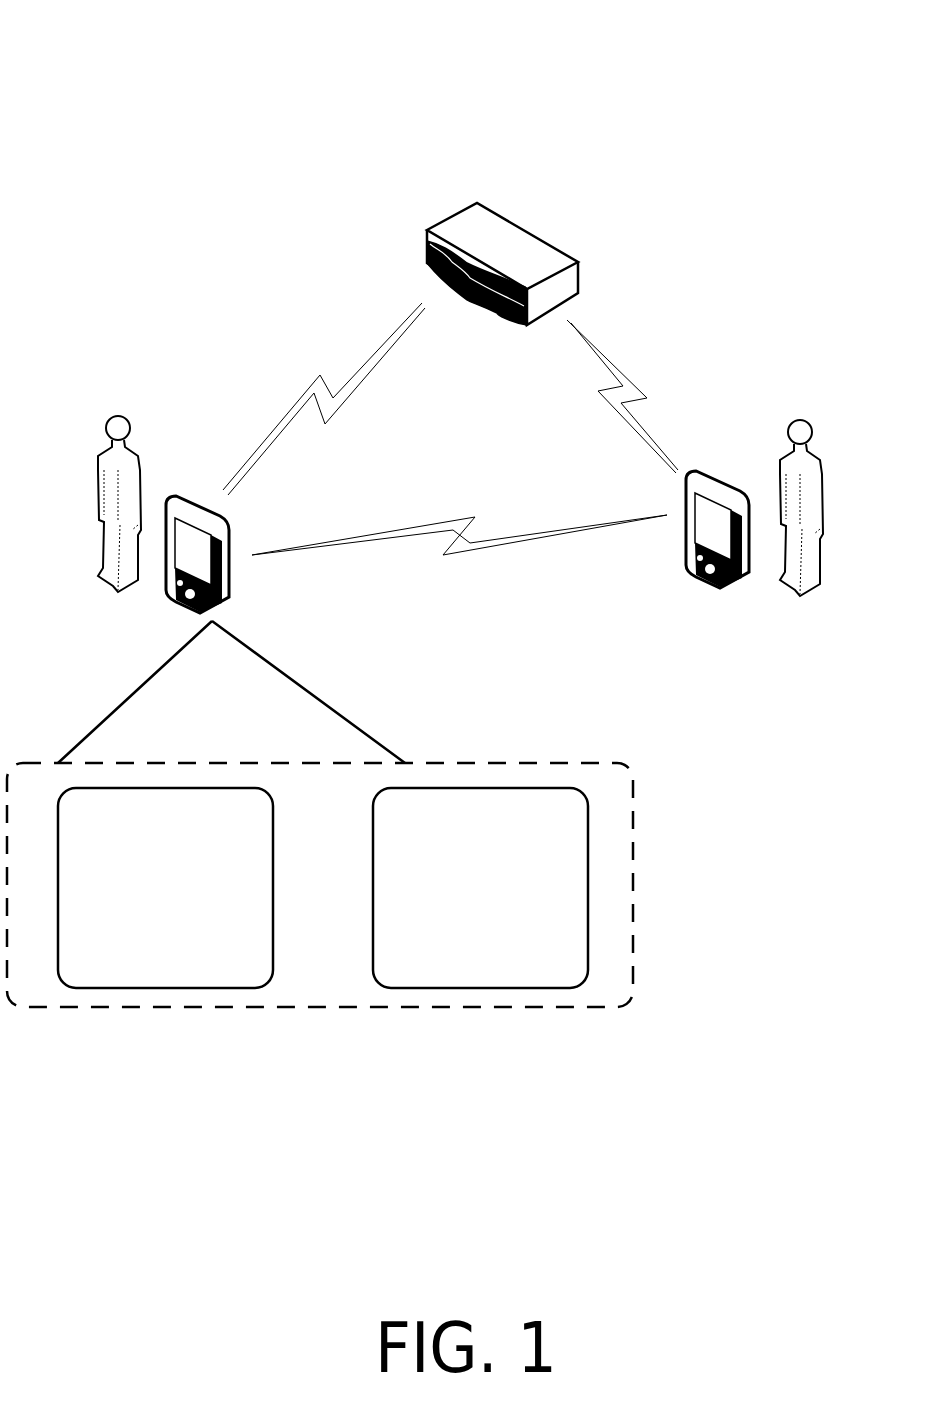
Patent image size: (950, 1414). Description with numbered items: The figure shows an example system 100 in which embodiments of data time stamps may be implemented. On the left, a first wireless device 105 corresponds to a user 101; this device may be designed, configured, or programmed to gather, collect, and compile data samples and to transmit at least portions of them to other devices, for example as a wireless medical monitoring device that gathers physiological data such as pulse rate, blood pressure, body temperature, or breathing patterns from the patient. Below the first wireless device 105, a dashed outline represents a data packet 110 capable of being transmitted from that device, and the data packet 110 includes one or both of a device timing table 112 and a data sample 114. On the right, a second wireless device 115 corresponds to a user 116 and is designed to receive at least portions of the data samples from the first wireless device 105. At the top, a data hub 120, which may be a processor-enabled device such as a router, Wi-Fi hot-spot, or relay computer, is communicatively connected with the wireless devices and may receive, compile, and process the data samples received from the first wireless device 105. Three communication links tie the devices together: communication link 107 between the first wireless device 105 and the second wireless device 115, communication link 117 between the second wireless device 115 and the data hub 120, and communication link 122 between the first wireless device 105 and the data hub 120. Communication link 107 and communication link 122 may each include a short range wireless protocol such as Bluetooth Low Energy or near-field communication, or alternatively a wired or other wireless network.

The system 100 is at (76, 24).
The user 101 is at (95, 504).
The first wireless device 105 is at (225, 562).
The communication link 107 is at (459, 564).
The data packet 110 is at (320, 814).
The device timing table 112 is at (165, 888).
The data sample 114 is at (480, 888).
The second wireless device 115 is at (699, 544).
The user 116 is at (832, 508).
The communication link 117 is at (640, 396).
The data hub 120 is at (502, 241).
The communication link 122 is at (324, 399).